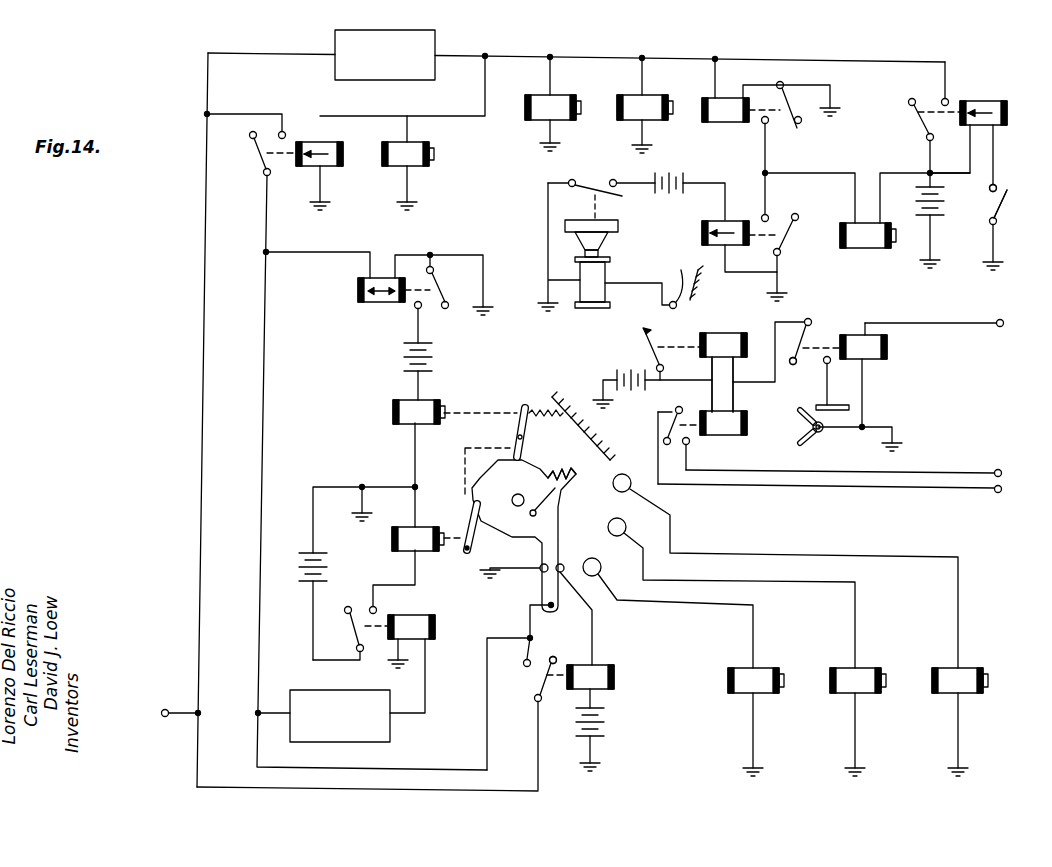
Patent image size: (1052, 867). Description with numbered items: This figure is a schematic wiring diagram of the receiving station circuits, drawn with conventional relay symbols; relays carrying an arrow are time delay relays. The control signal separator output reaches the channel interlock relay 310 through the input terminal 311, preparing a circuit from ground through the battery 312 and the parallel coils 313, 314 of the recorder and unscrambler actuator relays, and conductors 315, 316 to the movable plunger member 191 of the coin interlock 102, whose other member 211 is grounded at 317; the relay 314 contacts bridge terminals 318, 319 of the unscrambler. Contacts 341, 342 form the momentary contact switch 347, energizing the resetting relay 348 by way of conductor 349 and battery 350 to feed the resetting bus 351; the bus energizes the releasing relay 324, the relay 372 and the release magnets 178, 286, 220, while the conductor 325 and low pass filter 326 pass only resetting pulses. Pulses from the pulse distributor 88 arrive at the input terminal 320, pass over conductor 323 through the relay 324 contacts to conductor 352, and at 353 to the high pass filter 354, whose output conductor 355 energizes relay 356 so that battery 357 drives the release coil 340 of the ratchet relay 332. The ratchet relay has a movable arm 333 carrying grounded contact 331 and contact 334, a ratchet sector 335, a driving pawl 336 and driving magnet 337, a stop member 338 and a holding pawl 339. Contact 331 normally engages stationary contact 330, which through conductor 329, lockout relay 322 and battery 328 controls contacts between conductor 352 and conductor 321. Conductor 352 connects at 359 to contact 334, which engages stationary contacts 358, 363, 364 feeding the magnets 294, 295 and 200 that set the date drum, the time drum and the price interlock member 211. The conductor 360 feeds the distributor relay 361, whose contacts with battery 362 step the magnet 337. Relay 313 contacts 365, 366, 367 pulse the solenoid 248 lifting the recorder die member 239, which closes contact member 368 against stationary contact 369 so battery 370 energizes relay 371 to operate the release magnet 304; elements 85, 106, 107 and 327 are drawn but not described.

The switch 85 is at (654, 419).
The pulse distributor 88 is at (500, 488).
The coin interlock 102 is at (868, 412).
The relay assembly 106 is at (875, 341).
The relay assembly 107 is at (688, 323).
The release magnet 178 is at (425, 143).
The movable plunger member 191 is at (834, 403).
The magnet 200 is at (760, 668).
The bell crank member 211 is at (803, 438).
The release magnet 220 is at (655, 95).
The recorder die member 239 is at (620, 226).
The solenoid 248 is at (607, 272).
The release magnet 286 is at (565, 95).
The magnet coil 294 is at (964, 668).
The actuating magnet 295 is at (862, 668).
The release magnet 304 is at (865, 248).
The channel interlock relay 310 is at (875, 359).
The input terminal 311 is at (992, 330).
The battery 312 is at (617, 366).
The recorder actuator relay coil 313 is at (730, 333).
The unscrambler actuator relay coil 314 is at (727, 436).
The conductor 315 is at (805, 312).
The conductor 316 is at (800, 379).
The ground 317 is at (856, 430).
The terminal 318 is at (997, 469).
The terminal 319 is at (997, 493).
The input terminal 320 is at (172, 697).
The conductor 321 is at (338, 777).
The lockout relay 322 is at (615, 688).
The conductor 323 is at (196, 585).
The releasing relay 324 is at (302, 169).
The conductor 325 is at (258, 54).
The low pass filter 326 is at (383, 80).
The conductor 327 is at (472, 54).
The battery 328 is at (605, 732).
The conductor 329 is at (596, 648).
The stationary contact 330 is at (563, 565).
The grounded movable contact 331 is at (540, 575).
The ratchet relay 332 is at (545, 472).
The movable arm 333 is at (565, 608).
The movable contact 334 is at (560, 622).
The ratchet sector 335 is at (510, 530).
The driving pawl 336 is at (532, 425).
The driving magnet 337 is at (400, 425).
The stop member 338 is at (613, 451).
The holding pawl 339 is at (466, 517).
The release coil 340 is at (408, 552).
The contact 341 is at (1002, 215).
The contact 342 is at (1000, 190).
The momentary contact switch 347 is at (990, 200).
The resetting relay 348 is at (998, 101).
The conductor 349 is at (930, 147).
The battery 350 is at (912, 216).
The resetting bus 351 is at (430, 113).
The conductor 352 is at (263, 440).
The connection 353 is at (270, 706).
The high pass filter 354 is at (330, 742).
The output conductor 355 is at (428, 658).
The relay 356 is at (420, 615).
The battery 357 is at (330, 553).
The stationary contact 358 is at (613, 491).
The connection 359 is at (528, 613).
The conductor 360 is at (325, 252).
The distributor relay 361 is at (360, 305).
The battery 362 is at (446, 361).
The stationary contact 363 is at (627, 530).
The stationary contact 364 is at (603, 575).
The movable contact member 365 is at (644, 334).
The spring contact member 366 is at (668, 310).
The fixed contact member 367 is at (688, 276).
The contact member 368 is at (578, 179).
The stationary contact member 369 is at (612, 180).
The battery 370 is at (688, 172).
The relay 371 is at (700, 207).
The relay 372 is at (718, 122).